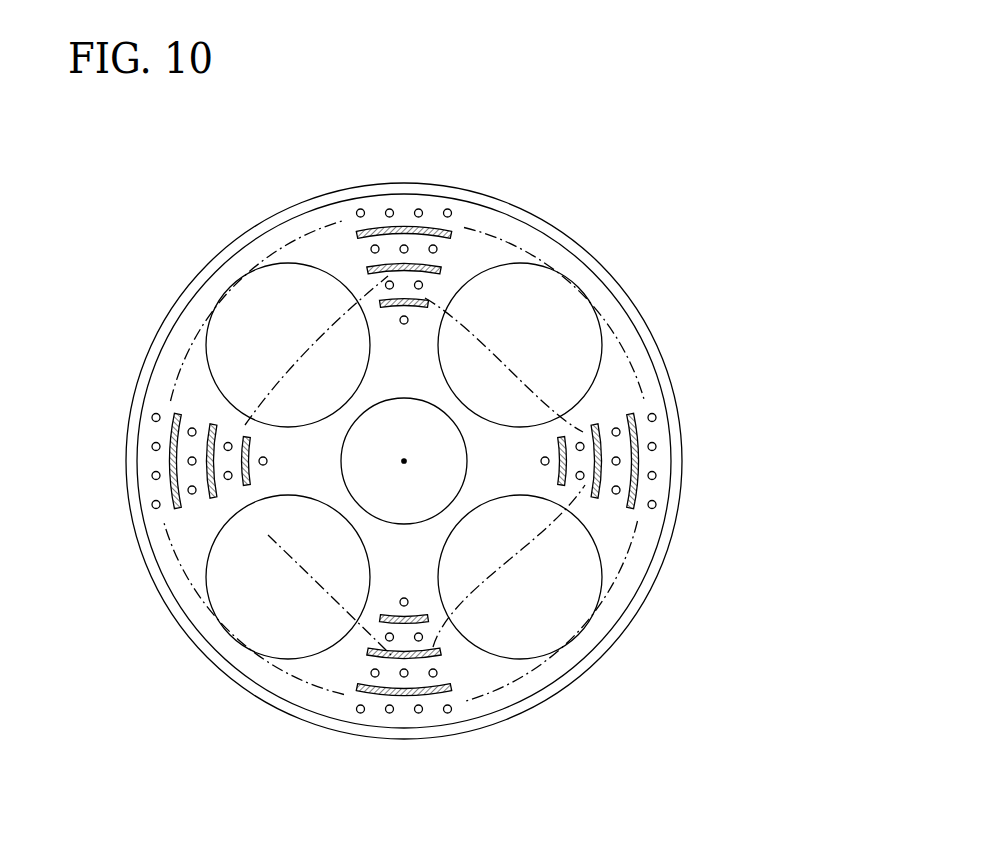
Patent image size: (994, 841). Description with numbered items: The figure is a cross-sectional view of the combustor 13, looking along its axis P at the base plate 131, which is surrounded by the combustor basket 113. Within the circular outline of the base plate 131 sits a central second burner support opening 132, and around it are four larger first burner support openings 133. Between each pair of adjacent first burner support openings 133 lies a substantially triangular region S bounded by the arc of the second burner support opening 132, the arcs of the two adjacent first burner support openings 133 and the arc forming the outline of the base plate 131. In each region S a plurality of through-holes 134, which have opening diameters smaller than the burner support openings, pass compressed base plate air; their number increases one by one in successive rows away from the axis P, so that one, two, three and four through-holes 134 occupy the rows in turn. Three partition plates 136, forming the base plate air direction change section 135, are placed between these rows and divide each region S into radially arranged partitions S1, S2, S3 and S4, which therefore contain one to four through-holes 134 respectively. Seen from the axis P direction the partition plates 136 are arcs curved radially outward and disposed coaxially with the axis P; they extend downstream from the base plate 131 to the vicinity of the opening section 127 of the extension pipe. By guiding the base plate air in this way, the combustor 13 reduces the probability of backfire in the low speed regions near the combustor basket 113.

The combustor 13 is at (663, 193).
The combustor basket 113 is at (623, 297).
The opening section 127 is at (190, 333).
The base plate 131 is at (230, 270).
The second burner support opening 132 is at (343, 460).
The first burner support opening 133 is at (287, 262).
The through-hole 134 is at (404, 186).
The base plate air direction change section 135 is at (428, 300).
The partition plate 136 is at (433, 462).
The region S is at (378, 207).
The partition S1 is at (397, 323).
The partition S2 is at (381, 288).
The partition S3 is at (368, 253).
The partition S4 is at (352, 217).
The axis P is at (408, 458).